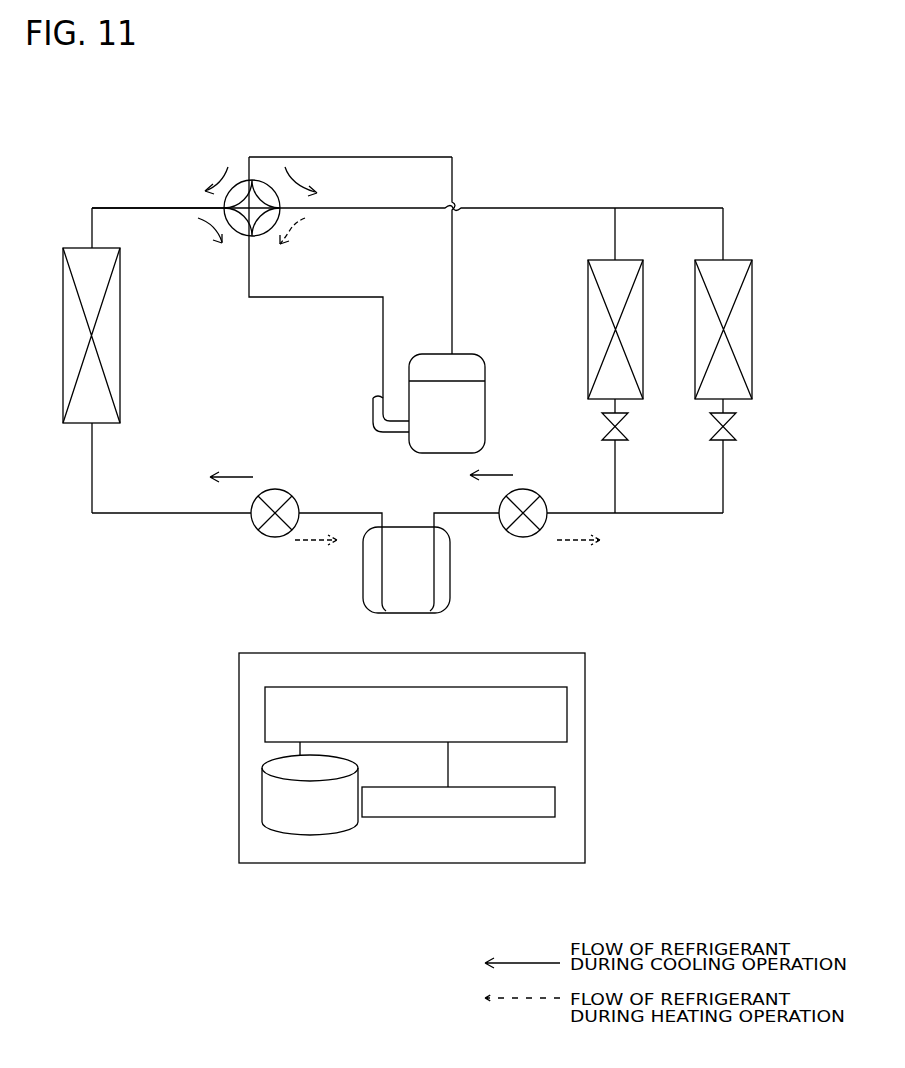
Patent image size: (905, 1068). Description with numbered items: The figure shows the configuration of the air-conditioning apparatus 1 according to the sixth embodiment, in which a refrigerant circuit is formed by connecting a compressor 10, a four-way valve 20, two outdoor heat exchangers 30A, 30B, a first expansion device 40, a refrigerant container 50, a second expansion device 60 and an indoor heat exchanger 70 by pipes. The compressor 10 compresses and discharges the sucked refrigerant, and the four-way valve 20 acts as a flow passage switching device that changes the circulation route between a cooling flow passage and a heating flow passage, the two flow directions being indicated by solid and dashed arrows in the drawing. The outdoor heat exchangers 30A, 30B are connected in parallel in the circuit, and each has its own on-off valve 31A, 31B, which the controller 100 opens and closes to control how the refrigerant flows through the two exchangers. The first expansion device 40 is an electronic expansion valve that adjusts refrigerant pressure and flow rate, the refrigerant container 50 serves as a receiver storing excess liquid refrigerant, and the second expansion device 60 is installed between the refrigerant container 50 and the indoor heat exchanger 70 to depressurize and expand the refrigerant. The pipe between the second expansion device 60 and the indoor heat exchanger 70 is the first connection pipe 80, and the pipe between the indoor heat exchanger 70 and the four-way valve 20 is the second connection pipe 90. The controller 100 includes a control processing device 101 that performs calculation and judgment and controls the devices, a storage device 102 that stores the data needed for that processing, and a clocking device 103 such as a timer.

The air-conditioning apparatus 1 is at (460, 135).
The compressor 10 is at (490, 428).
The four-way valve 20 is at (233, 238).
The outdoor heat exchanger 30A is at (587, 287).
The outdoor heat exchanger 30B is at (692, 284).
The on-off valve 31A is at (604, 417).
The on-off valve 31B is at (712, 417).
The first expansion device 40 is at (538, 489).
The refrigerant container 50 is at (452, 600).
The second expansion device 60 is at (282, 485).
The indoor heat exchanger 70 is at (122, 390).
The first connection pipe 80 is at (133, 511).
The second connection pipe 90 is at (115, 203).
The controller 100 is at (412, 779).
The control processing device 101 is at (507, 742).
The storage device 102 is at (337, 832).
The clocking device 103 is at (470, 817).